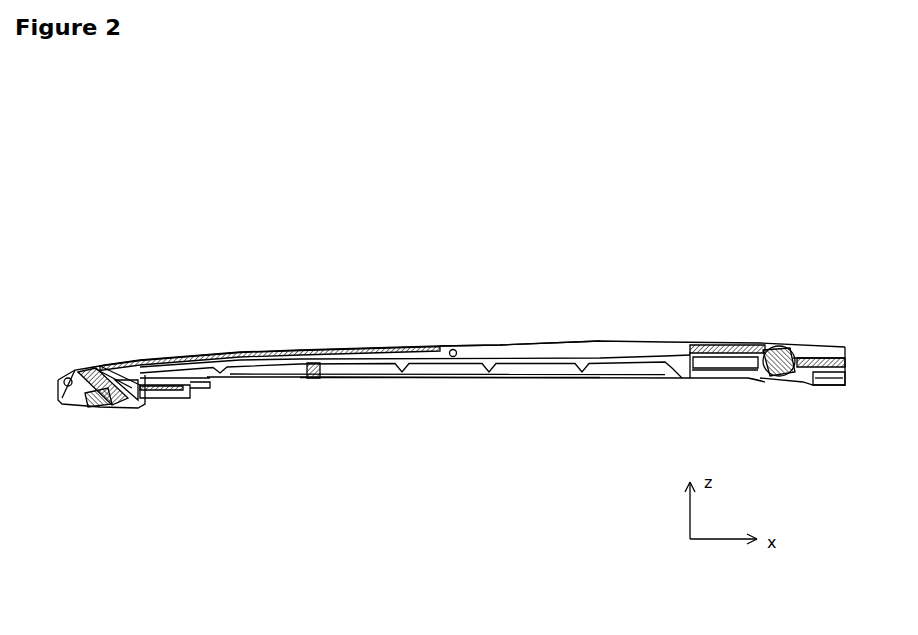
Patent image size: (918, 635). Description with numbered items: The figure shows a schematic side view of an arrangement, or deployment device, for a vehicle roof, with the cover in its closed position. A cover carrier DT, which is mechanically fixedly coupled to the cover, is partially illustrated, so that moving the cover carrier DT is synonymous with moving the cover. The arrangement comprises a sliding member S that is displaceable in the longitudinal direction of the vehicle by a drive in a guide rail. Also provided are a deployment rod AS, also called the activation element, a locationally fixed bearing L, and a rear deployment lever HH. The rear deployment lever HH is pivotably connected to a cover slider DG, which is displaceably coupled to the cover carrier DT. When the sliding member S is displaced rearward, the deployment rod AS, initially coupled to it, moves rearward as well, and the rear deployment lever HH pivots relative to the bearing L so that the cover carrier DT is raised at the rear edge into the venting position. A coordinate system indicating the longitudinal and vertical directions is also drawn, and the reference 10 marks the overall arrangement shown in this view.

The trim component 10 is at (742, 242).
The cover carrier DT is at (503, 345).
The sliding member S is at (163, 399).
The deployment rod AS is at (433, 371).
The cover slider DG is at (762, 378).
The rear deployment lever HH is at (790, 380).
The bearing L is at (828, 387).